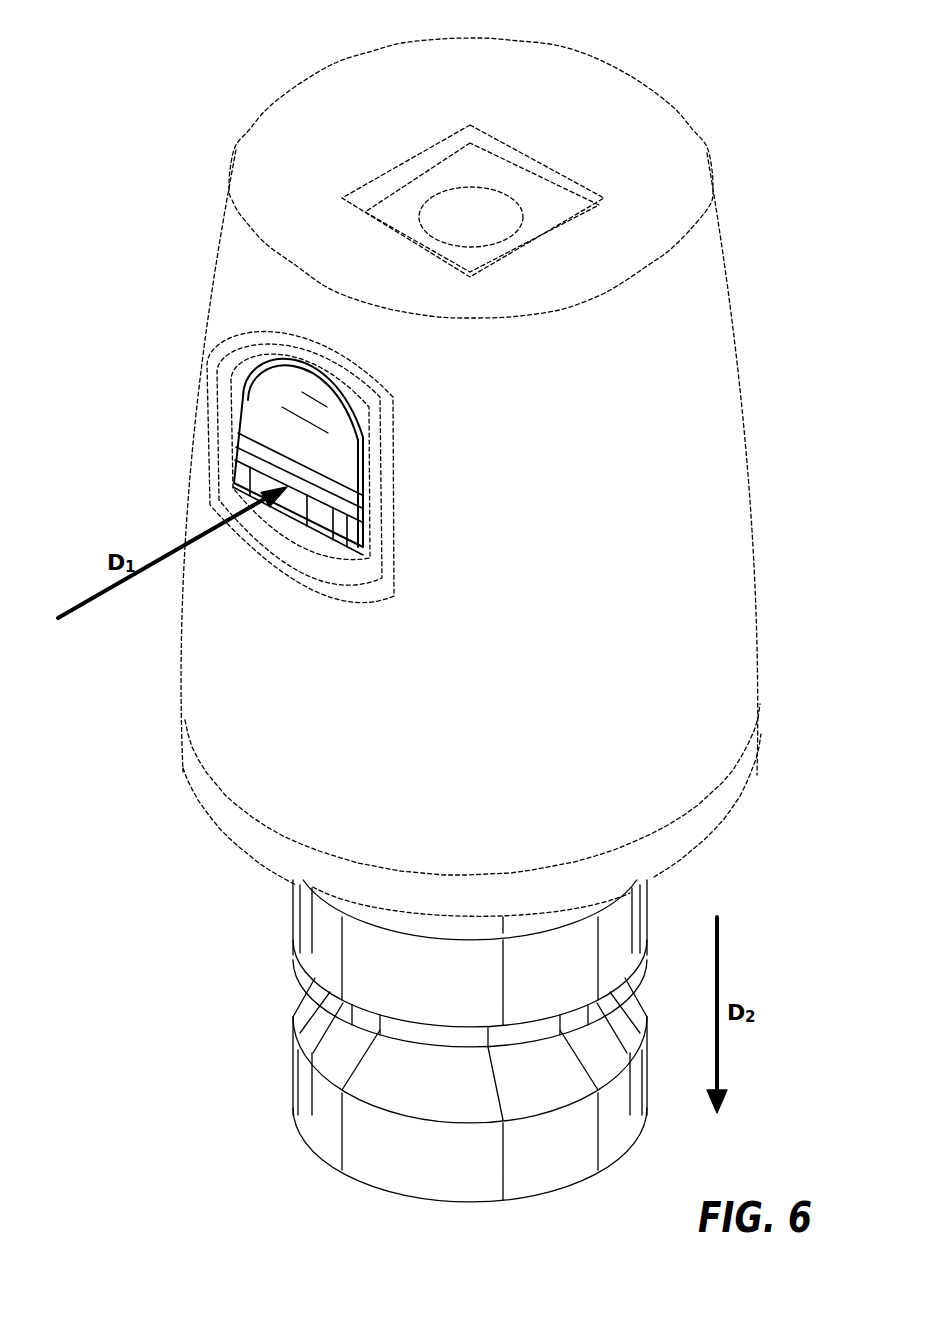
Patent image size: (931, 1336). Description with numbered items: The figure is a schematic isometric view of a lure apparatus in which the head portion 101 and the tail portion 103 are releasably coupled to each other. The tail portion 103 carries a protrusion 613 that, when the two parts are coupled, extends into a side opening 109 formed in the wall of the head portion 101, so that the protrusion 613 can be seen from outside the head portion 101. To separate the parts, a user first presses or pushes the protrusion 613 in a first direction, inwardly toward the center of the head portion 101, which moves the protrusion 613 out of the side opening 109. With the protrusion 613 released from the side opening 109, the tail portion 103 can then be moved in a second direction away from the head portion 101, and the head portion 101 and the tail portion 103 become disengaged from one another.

The head portion 101 is at (291, 183).
The side opening 109 is at (248, 374).
The protrusion 613 is at (240, 431).
The tail portion 103 is at (270, 973).